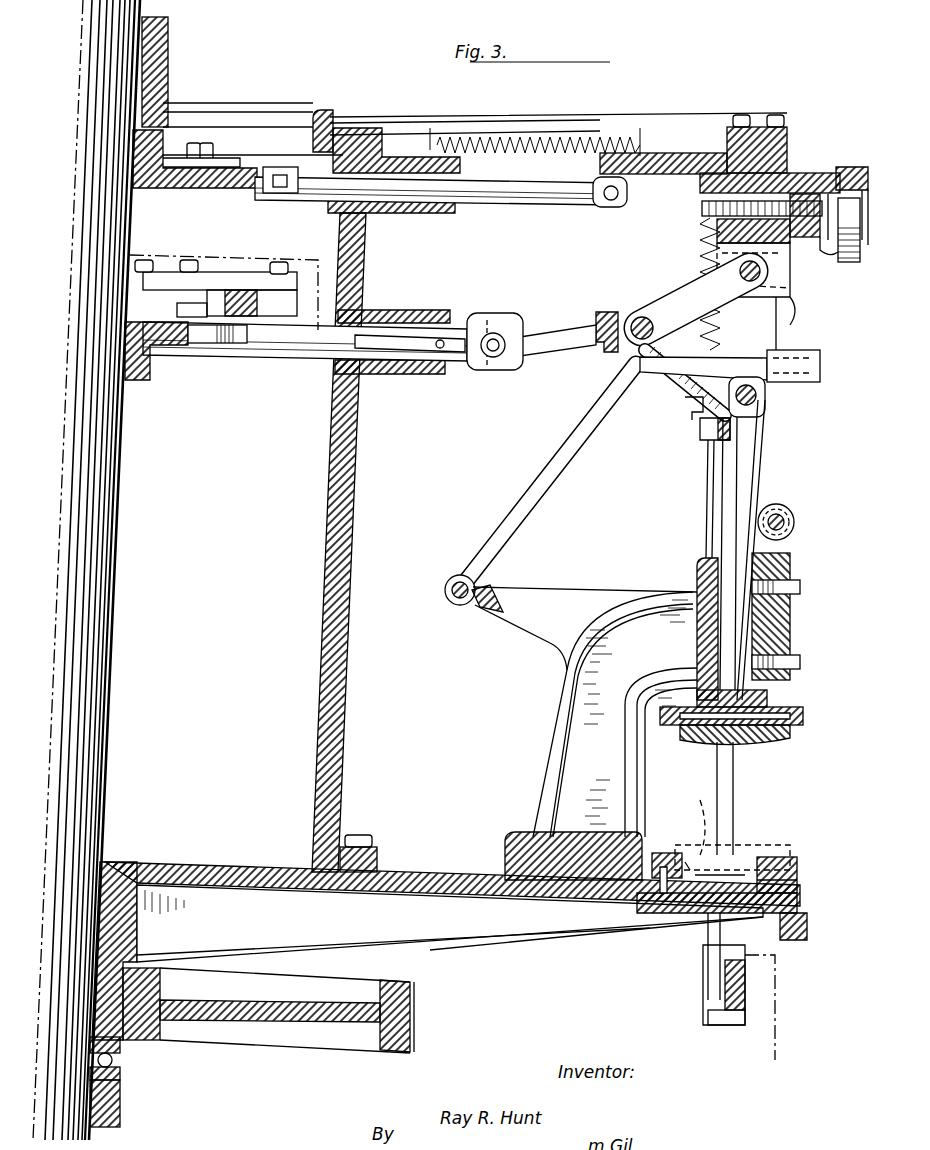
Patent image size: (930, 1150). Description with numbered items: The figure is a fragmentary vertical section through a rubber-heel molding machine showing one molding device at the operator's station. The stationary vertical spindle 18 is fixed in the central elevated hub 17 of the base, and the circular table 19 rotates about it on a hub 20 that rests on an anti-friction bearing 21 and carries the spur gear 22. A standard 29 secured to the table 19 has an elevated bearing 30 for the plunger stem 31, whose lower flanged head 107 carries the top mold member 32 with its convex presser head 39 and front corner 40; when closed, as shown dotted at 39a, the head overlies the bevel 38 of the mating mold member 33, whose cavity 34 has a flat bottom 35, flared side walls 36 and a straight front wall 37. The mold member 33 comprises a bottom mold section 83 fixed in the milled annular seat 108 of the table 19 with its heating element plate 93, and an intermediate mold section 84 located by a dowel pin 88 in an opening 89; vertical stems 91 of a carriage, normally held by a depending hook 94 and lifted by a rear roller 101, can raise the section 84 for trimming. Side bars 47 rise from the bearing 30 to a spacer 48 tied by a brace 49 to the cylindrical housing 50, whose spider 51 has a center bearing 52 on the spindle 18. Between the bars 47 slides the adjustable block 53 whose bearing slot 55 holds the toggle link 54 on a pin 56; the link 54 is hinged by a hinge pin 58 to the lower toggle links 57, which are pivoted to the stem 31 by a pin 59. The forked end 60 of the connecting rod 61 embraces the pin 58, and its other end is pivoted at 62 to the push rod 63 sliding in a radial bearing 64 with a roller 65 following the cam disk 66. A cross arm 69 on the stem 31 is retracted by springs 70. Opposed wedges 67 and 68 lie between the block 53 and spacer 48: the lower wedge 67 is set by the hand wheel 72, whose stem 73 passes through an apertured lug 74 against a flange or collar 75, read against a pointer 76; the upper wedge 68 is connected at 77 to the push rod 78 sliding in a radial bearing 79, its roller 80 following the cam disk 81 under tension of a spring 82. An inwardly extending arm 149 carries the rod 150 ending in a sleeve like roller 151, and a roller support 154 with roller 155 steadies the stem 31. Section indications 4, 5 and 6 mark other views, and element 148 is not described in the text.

The central elevated hub 17 is at (120, 1108).
The vertical shaft or spindle 18 is at (115, 725).
The circular table 19 is at (462, 858).
The table hub 20 is at (145, 925).
The anti-friction bearing 21 is at (120, 1073).
The spur gear 22 is at (315, 1012).
The standard 29 is at (552, 712).
The elevated bearing 30 is at (697, 572).
The plunger stem 31 is at (722, 512).
The top mold member 32 is at (697, 750).
The mating mold member 33 is at (782, 832).
The cavity 34 is at (685, 855).
The flat bottom 35 is at (755, 868).
The flared side walls 36 is at (740, 850).
The straight front wall 37 is at (685, 855).
The bevel 38 is at (660, 865).
The convex presser head 39 is at (775, 740).
The closed position of presser head 39a is at (702, 815).
The corner 40 is at (673, 742).
The side bars 47 is at (707, 470).
The spacer 48 is at (787, 132).
The brace 49 is at (455, 120).
The cylindrical housing 50 is at (348, 507).
The spider 51 is at (250, 118).
The center bearing 52 is at (168, 45).
The adjustable block 53 is at (717, 230).
The toggle link 54 is at (680, 310).
The bearing slot 55 is at (700, 250).
The pin 56 is at (760, 282).
The lower toggle links 57 is at (686, 378).
The hinge pin 58 is at (638, 318).
The pin 59 is at (765, 395).
The forked end 60 is at (605, 312).
The connecting rod 61 is at (548, 350).
The pivot 62 is at (493, 357).
The push rod 63 is at (283, 356).
The radial bearing 64 is at (390, 312).
The roller 65 is at (230, 343).
The cam disk 66 is at (165, 345).
The lower wedge 67 is at (700, 183).
The upper wedge 68 is at (655, 153).
The cross arm 69 is at (700, 430).
The springs 70 is at (685, 405).
The hand wheel 72 is at (838, 250).
The stem 73 is at (718, 207).
The apertured lug 74 is at (826, 256).
The flange or collar 75 is at (805, 237).
The pointer 76 is at (852, 165).
The connection 77 is at (605, 207).
The push rod 78 is at (472, 202).
The radial bearing 79 is at (400, 212).
The roller 80 is at (282, 193).
The cam disk 81 is at (210, 186).
The spring 82 is at (530, 125).
The bottom mold section 83 is at (797, 870).
The intermediate mold section 84 is at (780, 857).
The dowel pin 88 is at (672, 905).
The opening 89 is at (625, 920).
The vertical stems 91 is at (775, 975).
The heating element plate 93 is at (815, 930).
The depending hook 94 is at (703, 968).
The rear roller 101 is at (708, 1020).
The flanged head 107 is at (780, 707).
The milled annular seat 108 is at (695, 905).
The plate 148 is at (177, 308).
The inwardly extending arm 149 is at (558, 600).
The rod 150 is at (540, 480).
The sleeve like roller 151 is at (818, 360).
The roller support 154 is at (790, 640).
The roller 155 is at (794, 524).
The section line 4 is at (152, 252).
The section line 5 is at (183, 157).
The section line 6 is at (772, 100).